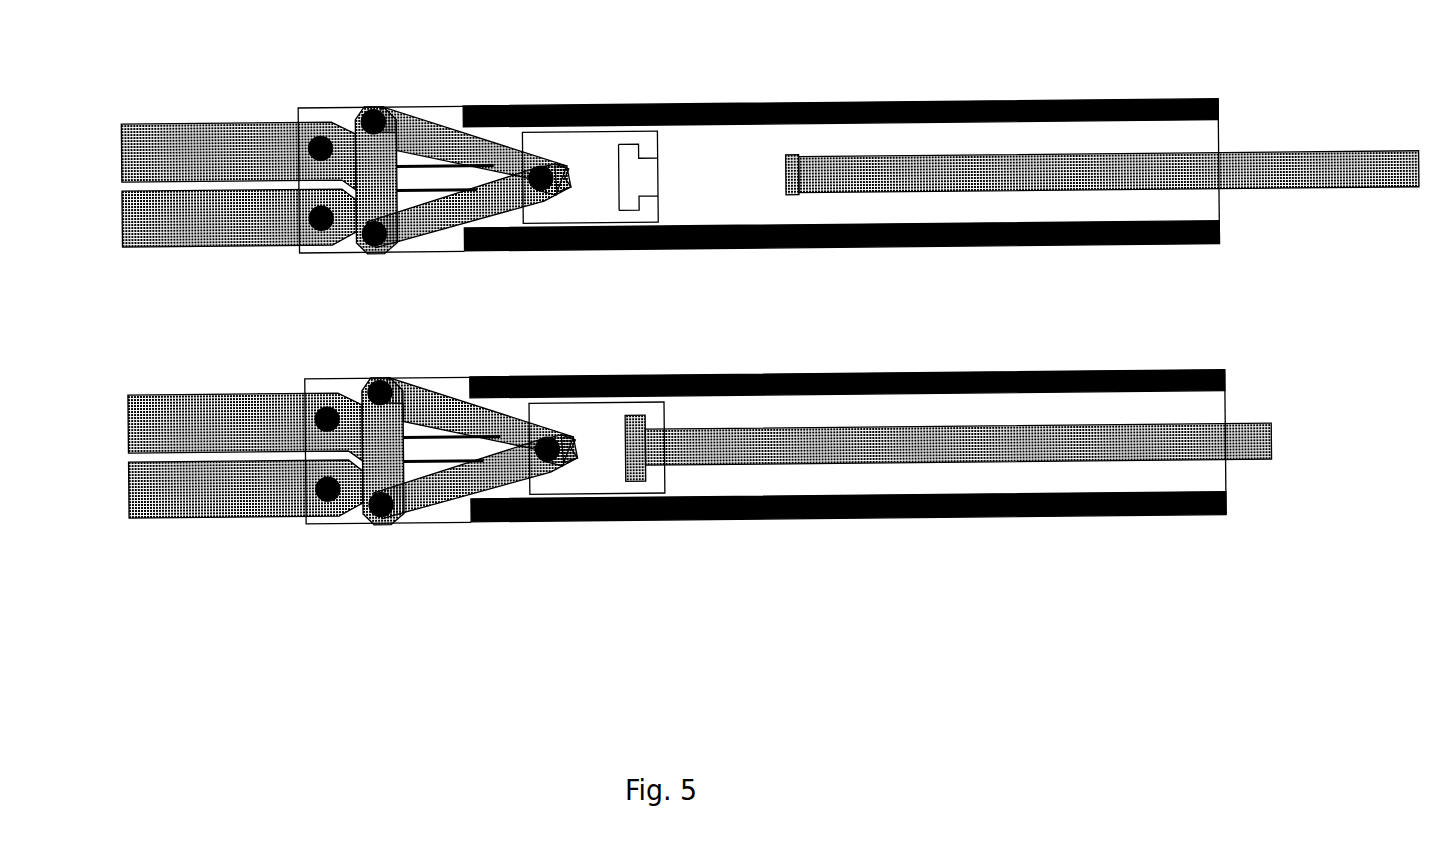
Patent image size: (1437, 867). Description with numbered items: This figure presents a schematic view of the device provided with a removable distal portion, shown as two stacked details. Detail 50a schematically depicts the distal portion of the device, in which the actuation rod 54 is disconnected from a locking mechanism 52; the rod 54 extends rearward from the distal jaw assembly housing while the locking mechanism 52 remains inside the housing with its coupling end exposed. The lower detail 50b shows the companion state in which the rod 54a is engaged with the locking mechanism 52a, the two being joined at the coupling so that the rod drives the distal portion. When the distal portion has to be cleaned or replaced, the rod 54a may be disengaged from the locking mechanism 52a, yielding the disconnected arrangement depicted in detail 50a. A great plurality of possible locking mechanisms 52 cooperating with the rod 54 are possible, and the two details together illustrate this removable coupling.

The detail 50a is at (163, 81).
The end effector assembly in second (advanced) position 50b is at (733, 417).
The locking mechanism 52 is at (583, 144).
The locking mechanism 52a is at (621, 405).
The actuation rod 54 is at (1065, 169).
The rod 54a is at (1003, 411).